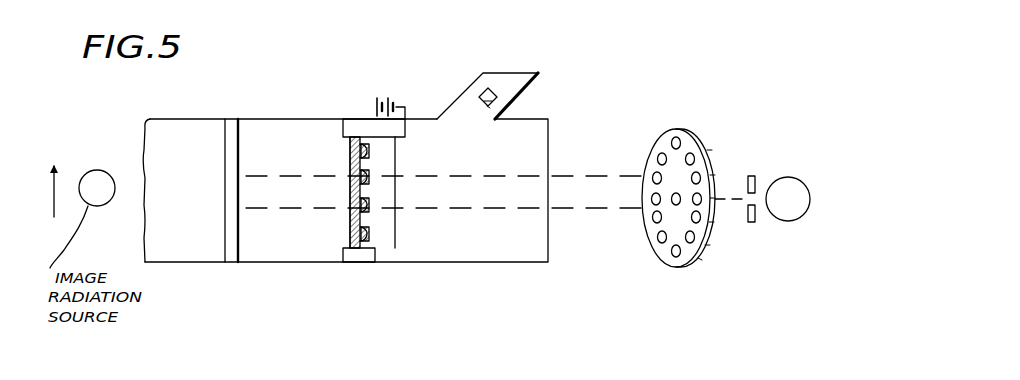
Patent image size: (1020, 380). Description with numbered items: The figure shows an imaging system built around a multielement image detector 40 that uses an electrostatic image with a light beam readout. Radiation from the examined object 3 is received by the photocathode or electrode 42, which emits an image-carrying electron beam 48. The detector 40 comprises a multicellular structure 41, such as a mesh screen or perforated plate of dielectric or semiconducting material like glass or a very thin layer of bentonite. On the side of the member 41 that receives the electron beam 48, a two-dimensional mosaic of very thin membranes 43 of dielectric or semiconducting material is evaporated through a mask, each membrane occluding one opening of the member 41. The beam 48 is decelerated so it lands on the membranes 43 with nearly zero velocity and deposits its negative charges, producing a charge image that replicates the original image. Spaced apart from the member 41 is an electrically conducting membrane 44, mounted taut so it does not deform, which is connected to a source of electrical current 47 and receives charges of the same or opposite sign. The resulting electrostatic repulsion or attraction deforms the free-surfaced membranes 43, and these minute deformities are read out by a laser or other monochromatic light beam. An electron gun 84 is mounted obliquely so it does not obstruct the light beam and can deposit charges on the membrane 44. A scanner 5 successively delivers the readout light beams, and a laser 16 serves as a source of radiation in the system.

The examined object 3 is at (54, 217).
The scanner 5 is at (680, 263).
The laser 16 is at (785, 214).
The multielement image detector 40 is at (373, 196).
The multicellular structure 41 is at (352, 220).
The photocathode or electrode 42 is at (233, 260).
The membranes 43 is at (367, 243).
The electrically conducting membrane 44 is at (396, 234).
The source of electrical current 47 is at (380, 98).
The electron beam 48 is at (275, 175).
The electron gun 84 is at (497, 97).